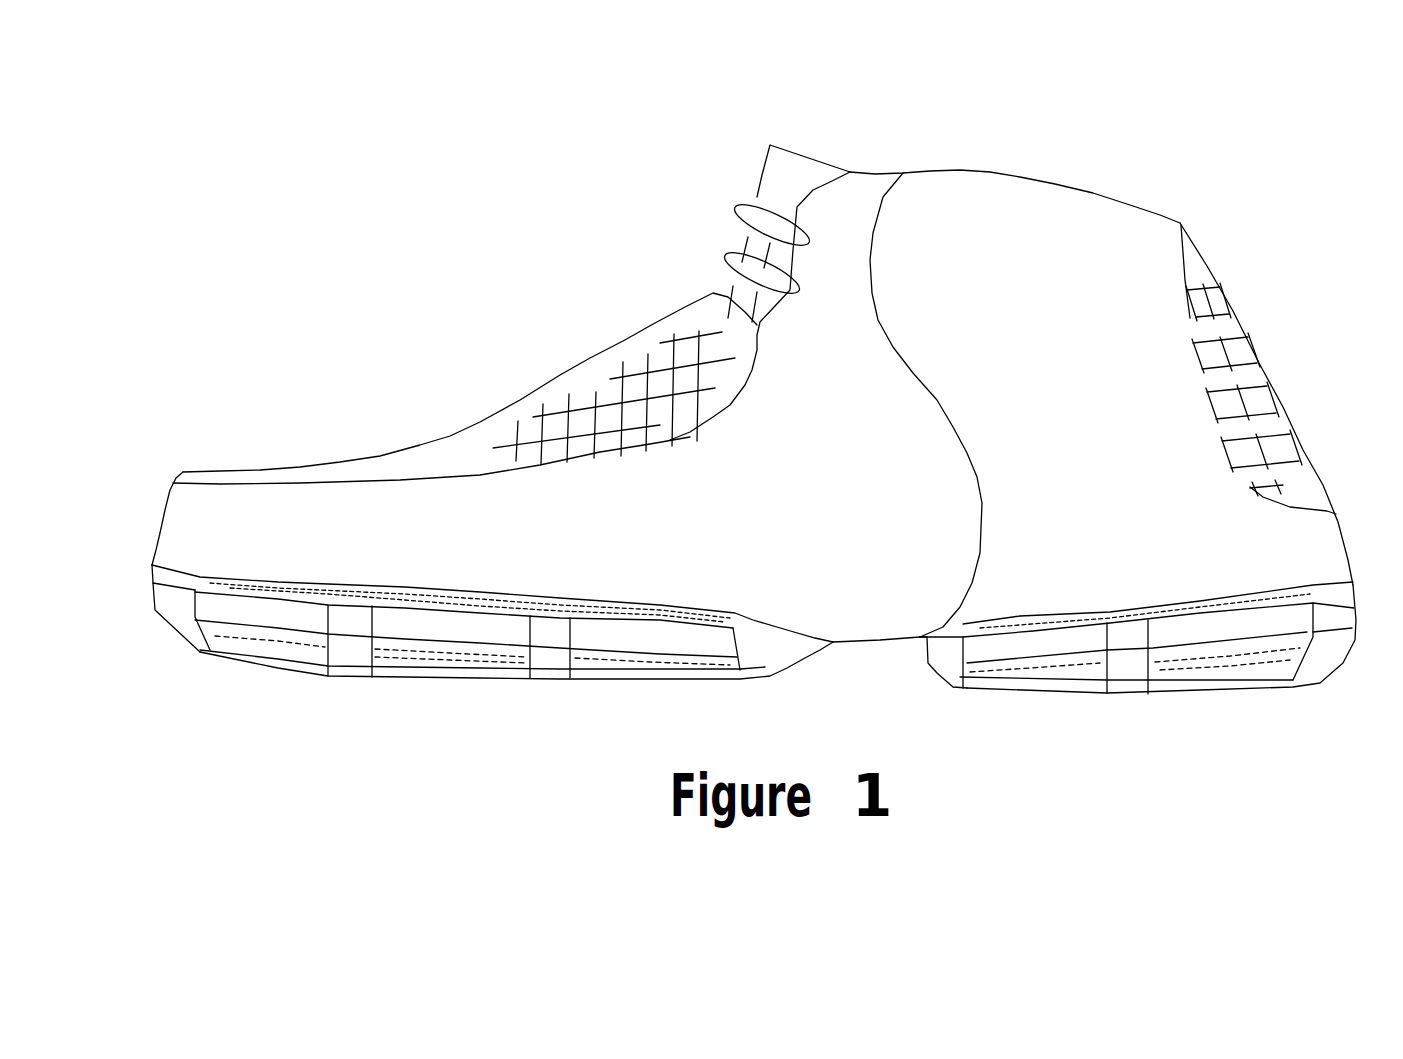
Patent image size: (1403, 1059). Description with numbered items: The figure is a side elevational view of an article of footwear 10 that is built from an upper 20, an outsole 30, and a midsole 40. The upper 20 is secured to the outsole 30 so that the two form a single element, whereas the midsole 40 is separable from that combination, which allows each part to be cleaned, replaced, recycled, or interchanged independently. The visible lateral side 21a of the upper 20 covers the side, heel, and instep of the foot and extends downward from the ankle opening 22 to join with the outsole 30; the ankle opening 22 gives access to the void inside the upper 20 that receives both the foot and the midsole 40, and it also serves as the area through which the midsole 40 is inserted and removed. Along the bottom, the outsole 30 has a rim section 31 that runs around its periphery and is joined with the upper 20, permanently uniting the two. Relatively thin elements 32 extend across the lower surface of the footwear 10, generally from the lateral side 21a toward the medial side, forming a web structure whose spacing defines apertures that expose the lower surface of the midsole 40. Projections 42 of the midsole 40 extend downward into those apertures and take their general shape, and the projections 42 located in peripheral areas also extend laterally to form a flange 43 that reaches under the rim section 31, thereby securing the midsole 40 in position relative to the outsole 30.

The article of footwear 10 is at (418, 292).
The upper 20 is at (628, 340).
The lateral side 21a is at (823, 506).
The ankle opening 22 is at (1022, 175).
The outsole 30 is at (161, 637).
The rim section 31 is at (278, 585).
The elements 32 is at (186, 645).
The midsole 40 is at (431, 681).
The projections 42 is at (255, 640).
The flange 43 is at (457, 623).